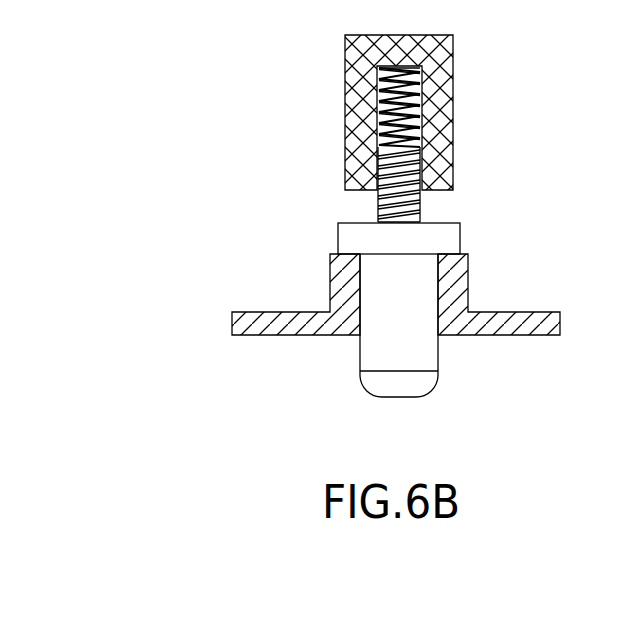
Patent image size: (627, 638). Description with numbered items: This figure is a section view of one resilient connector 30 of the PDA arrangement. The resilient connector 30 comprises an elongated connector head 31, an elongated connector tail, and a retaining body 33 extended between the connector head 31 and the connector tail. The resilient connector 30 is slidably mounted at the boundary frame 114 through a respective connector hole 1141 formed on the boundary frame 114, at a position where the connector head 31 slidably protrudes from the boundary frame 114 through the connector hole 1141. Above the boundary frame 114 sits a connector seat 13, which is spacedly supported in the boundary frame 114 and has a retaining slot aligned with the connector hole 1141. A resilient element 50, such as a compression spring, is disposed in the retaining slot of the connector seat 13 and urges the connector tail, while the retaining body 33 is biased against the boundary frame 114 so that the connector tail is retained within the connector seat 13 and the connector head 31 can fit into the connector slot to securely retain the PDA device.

The connector seat 13 is at (452, 83).
The resilient element 50 is at (432, 203).
The retaining body 33 is at (443, 238).
The boundary frame 114 is at (458, 278).
The connector hole 1141 is at (432, 307).
The connector head 31 is at (372, 351).
The resilient connector 30 is at (444, 357).